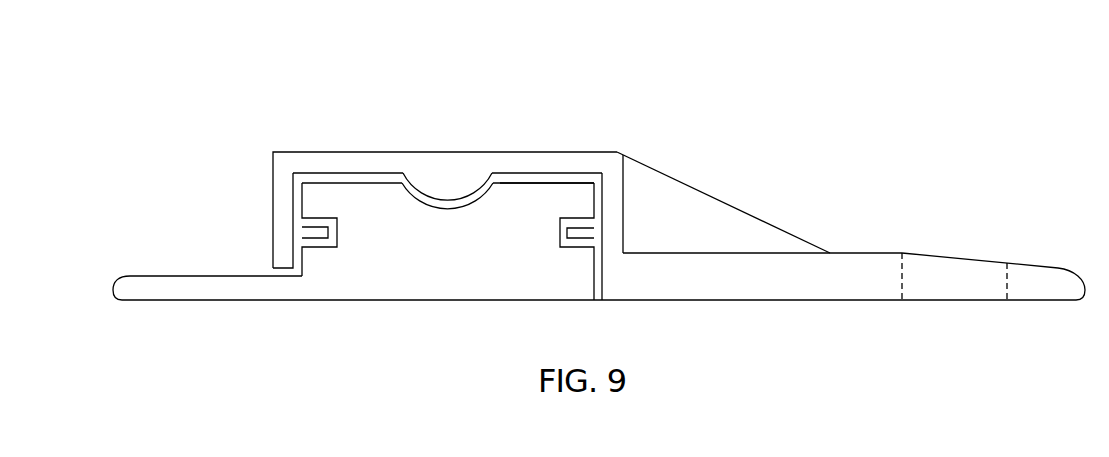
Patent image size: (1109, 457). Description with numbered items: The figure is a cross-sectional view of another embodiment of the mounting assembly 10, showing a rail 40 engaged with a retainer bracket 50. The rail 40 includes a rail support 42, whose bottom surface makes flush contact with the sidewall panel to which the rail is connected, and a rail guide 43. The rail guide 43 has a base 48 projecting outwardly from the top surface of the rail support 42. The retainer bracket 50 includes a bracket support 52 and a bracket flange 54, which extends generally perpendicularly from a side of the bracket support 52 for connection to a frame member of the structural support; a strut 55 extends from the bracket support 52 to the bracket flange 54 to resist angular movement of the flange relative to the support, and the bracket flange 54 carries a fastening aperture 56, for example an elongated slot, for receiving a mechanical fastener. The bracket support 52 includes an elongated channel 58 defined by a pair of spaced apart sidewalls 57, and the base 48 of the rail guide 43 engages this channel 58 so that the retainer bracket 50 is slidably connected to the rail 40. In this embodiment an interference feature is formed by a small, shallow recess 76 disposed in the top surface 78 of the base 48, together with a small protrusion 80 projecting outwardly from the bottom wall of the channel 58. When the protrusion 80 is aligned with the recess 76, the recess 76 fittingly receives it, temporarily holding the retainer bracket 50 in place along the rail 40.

The mounting assembly 10 is at (170, 112).
The rail 40 is at (147, 310).
The rail support 42 is at (240, 288).
The rail guide 43 is at (347, 263).
The base 48 is at (387, 240).
The retainer bracket 50 is at (838, 153).
The bracket support 52 is at (292, 151).
The bracket flange 54 is at (795, 292).
The strut 55 is at (697, 189).
The fastening aperture 56 is at (958, 270).
The sidewall 57 is at (272, 184).
The channel 58 is at (365, 174).
The recess 76 is at (450, 210).
The top surface 78 is at (525, 185).
The protrusion 80 is at (449, 200).